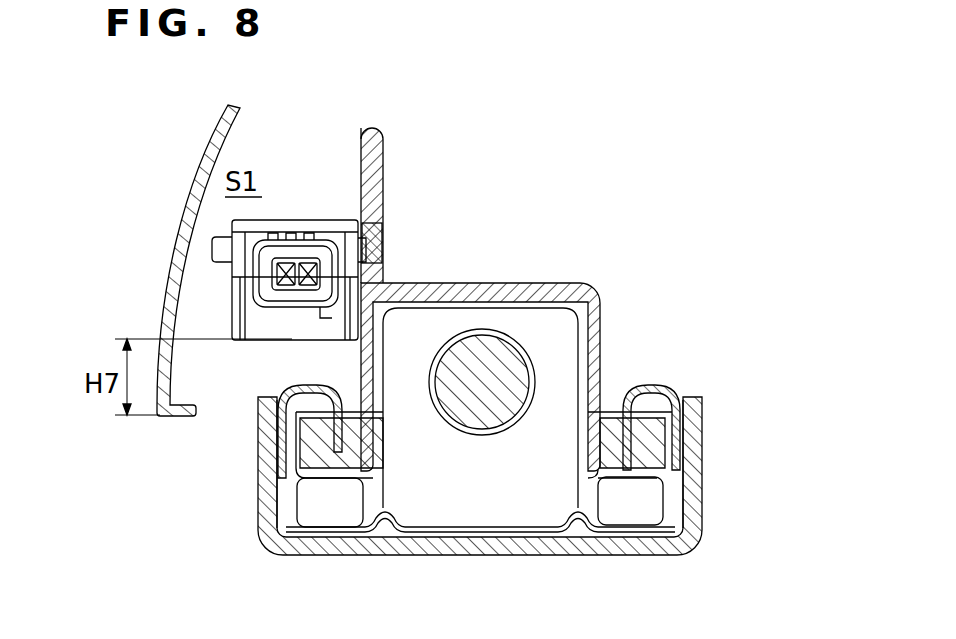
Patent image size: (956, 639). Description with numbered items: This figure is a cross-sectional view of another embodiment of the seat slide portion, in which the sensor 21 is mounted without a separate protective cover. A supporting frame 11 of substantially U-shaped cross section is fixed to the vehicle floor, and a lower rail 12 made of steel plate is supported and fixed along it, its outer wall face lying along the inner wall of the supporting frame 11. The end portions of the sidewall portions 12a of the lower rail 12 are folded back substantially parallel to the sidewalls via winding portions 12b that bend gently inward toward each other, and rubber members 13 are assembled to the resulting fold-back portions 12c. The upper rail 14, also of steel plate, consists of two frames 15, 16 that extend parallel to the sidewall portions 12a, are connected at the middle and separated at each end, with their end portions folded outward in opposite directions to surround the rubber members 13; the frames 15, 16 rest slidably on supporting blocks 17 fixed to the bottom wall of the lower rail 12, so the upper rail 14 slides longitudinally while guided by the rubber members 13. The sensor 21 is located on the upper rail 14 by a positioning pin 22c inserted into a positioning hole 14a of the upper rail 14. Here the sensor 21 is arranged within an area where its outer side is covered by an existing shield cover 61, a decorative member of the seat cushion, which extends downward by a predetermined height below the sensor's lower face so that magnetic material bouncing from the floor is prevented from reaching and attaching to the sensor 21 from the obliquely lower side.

The supporting frame 11 is at (262, 479).
The lower rail 12 is at (685, 394).
The sidewall portion 12a is at (275, 457).
The winding portion 12b is at (305, 390).
The fold-back portion 12c is at (383, 443).
The rubber member 13 is at (370, 462).
The upper rail 14 is at (386, 188).
The positioning hole 14a is at (375, 247).
The frame 15 is at (361, 137).
The frame 16 is at (385, 135).
The supporting block 17 is at (330, 515).
The sensor 21 is at (308, 207).
The positioning pin 22c is at (222, 262).
The shield cover 61 is at (190, 192).